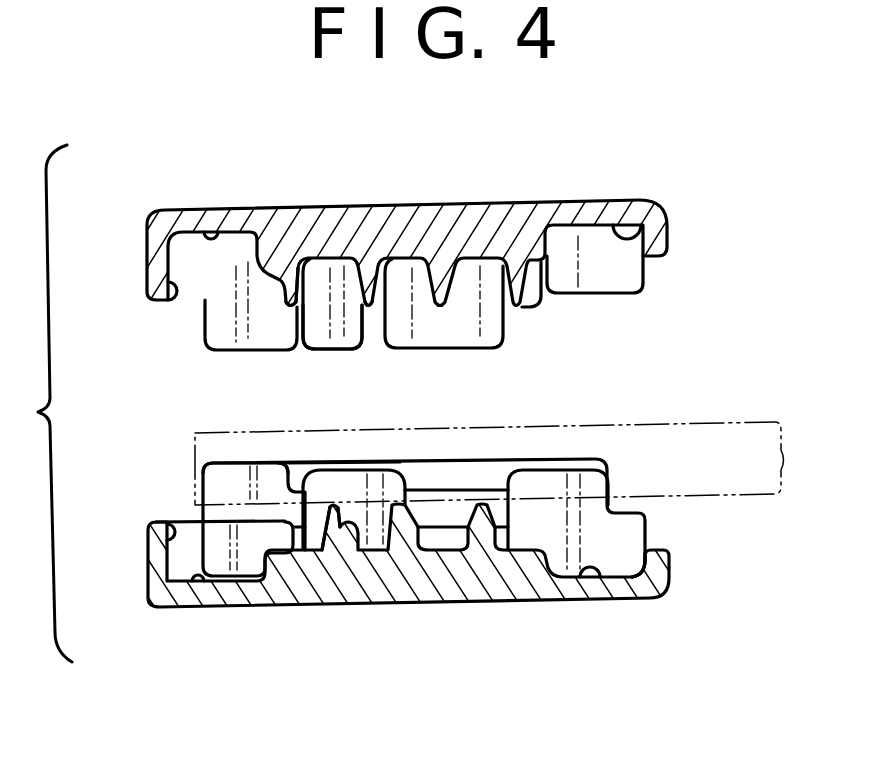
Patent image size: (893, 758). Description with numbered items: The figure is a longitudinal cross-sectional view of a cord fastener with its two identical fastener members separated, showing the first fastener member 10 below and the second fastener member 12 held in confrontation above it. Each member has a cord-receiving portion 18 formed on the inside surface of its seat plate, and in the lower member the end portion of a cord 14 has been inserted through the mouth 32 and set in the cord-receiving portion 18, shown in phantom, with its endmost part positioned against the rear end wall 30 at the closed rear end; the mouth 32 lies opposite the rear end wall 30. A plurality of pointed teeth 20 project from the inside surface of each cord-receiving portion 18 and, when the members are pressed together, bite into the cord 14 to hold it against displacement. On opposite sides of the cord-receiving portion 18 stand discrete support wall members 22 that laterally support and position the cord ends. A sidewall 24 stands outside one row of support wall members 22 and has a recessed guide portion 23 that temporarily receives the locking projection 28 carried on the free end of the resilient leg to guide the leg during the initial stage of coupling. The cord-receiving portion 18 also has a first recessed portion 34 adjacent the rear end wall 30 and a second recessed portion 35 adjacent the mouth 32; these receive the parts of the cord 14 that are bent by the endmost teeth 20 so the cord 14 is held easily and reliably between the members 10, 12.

The first fastener member 10 is at (672, 588).
The second fastener member 12 is at (548, 196).
The cord 14 is at (718, 430).
The cord-receiving portion 18 is at (325, 275).
The pointed teeth 20 is at (383, 308).
The support wall members 22 is at (233, 351).
The recessed guide portion 23 is at (298, 462).
The sidewall 24 is at (212, 478).
The locking projection 28 is at (338, 351).
The rear end wall 30 is at (176, 304).
The mouth 32 is at (655, 252).
The first recessed portion 34 is at (208, 229).
The second recessed portion 35 is at (655, 233).